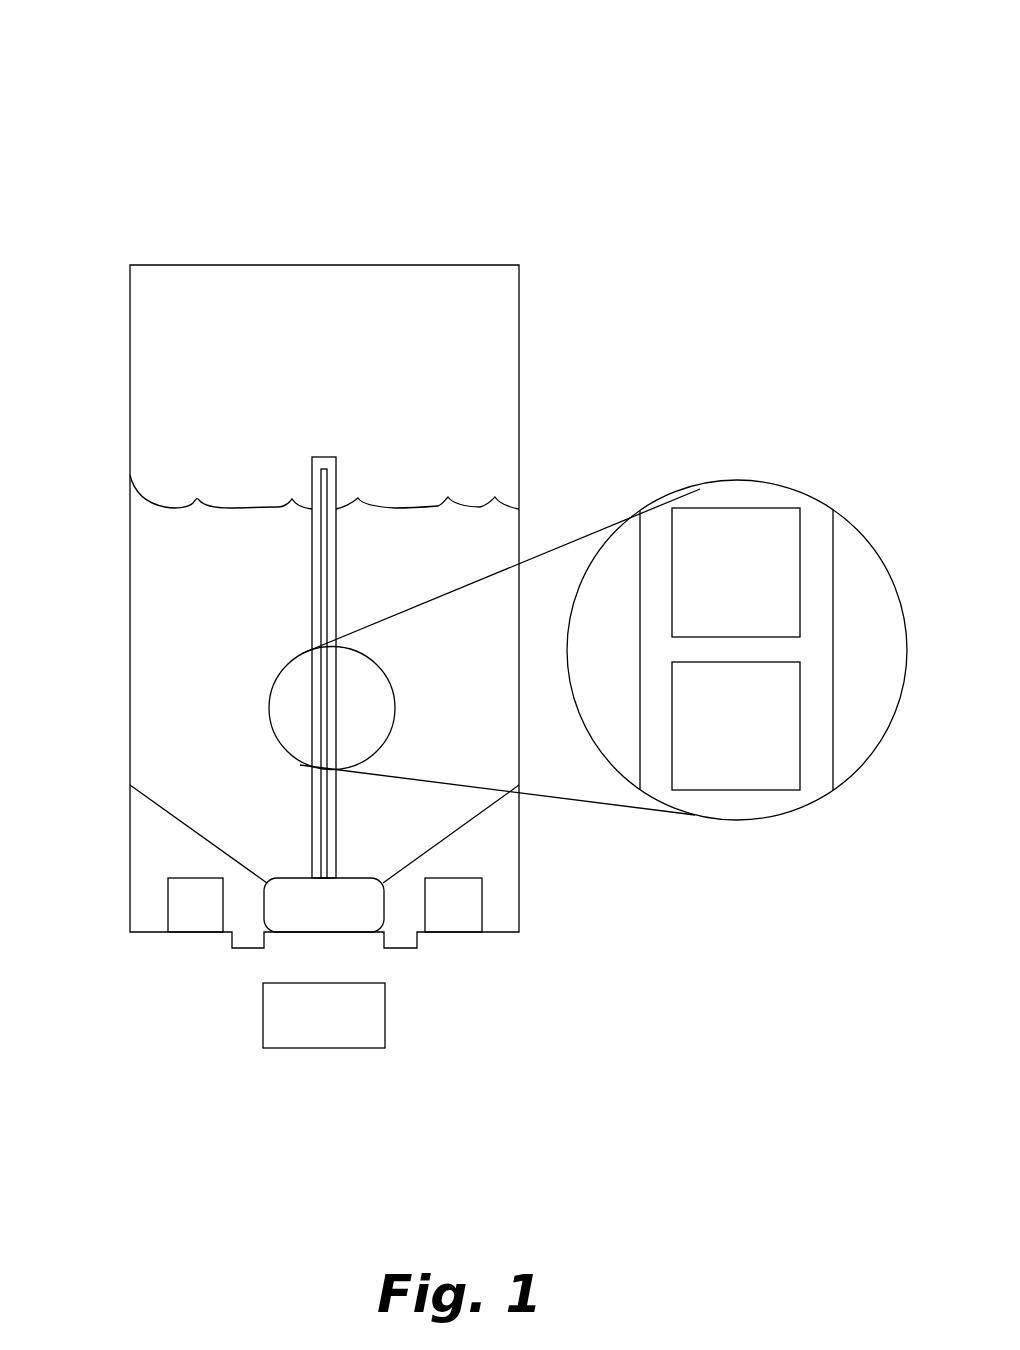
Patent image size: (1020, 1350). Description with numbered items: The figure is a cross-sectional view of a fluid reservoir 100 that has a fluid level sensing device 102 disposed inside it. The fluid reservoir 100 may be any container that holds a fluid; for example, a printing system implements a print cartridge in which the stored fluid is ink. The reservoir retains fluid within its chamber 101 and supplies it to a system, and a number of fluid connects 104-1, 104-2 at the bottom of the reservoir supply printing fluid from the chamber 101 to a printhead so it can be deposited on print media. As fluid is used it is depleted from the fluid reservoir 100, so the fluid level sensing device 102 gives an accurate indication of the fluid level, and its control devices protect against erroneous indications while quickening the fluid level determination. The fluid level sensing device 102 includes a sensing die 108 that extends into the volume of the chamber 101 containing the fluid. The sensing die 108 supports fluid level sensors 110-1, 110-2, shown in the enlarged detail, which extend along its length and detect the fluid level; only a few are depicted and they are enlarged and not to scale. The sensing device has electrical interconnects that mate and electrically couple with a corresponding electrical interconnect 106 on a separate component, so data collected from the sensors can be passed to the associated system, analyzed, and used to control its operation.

The fluid reservoir 100 is at (322, 90).
The chamber 101 is at (470, 352).
The fluid level sensing device 102 is at (312, 600).
The fluid connect 104-1 is at (187, 915).
The fluid connect 104-2 is at (470, 907).
The electrical interconnect 106 is at (372, 1013).
The sensing die 108 is at (812, 777).
The fluid level sensor 110-1 is at (762, 515).
The fluid level sensor 110-2 is at (687, 783).